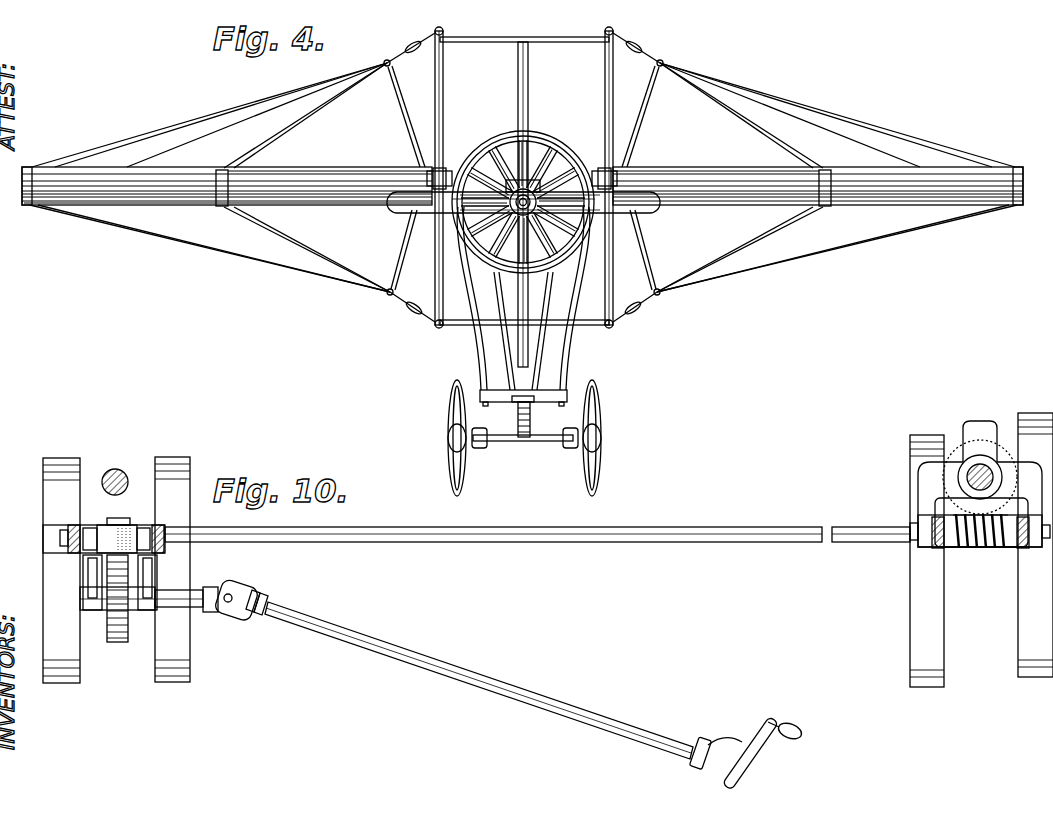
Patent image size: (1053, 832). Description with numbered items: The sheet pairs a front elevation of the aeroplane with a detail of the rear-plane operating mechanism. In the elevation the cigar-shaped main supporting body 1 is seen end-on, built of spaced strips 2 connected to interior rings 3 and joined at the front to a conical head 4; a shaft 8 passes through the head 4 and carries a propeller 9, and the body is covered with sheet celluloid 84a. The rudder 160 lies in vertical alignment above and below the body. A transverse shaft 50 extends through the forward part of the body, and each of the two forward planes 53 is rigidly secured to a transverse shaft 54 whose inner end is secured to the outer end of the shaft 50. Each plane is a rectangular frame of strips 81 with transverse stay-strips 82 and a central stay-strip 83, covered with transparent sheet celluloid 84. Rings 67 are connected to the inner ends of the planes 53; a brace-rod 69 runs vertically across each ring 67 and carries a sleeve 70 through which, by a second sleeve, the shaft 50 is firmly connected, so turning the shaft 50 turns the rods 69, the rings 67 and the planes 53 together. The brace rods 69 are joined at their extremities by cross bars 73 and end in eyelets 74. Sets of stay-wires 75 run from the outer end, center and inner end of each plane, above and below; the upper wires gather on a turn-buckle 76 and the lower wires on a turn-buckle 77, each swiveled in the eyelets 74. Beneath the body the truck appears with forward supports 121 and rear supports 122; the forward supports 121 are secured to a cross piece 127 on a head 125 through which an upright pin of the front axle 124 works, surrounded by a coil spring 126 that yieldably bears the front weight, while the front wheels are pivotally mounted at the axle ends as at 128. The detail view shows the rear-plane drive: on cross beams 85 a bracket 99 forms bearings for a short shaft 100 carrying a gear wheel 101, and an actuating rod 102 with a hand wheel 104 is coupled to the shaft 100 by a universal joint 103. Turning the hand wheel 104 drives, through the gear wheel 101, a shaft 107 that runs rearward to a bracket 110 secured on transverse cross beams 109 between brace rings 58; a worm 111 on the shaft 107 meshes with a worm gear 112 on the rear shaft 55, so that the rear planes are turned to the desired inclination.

In FIG. 4, the main supporting body 1 is at (500, 128).
In FIG. 4, the strips 2 is at (486, 152).
In FIG. 4, the rings 3 is at (530, 133).
In FIG. 4, the conical head 4 is at (508, 218).
In FIG. 4, the shaft 8 is at (548, 150).
In FIG. 4, the propeller 9 is at (650, 212).
In FIG. 10, the shaft 50 is at (118, 470).
In FIG. 4, the forward planes 53 is at (522, 163).
In FIG. 4, the transverse shaft 54 is at (130, 195).
In FIG. 10, the shaft 55 is at (968, 477).
In FIG. 10, the brace rings 58 is at (912, 443).
In FIG. 4, the rings 67 is at (428, 95).
In FIG. 4, the brace-rod 69 is at (444, 80).
In FIG. 4, the sleeve 70 is at (436, 168).
In FIG. 4, the cross bars 73 is at (497, 37).
In FIG. 4, the eyelets 74 is at (448, 22).
In FIG. 4, the stay-wires 75 is at (220, 112).
In FIG. 4, the turn-buckle 76 is at (410, 44).
In FIG. 4, the turn-buckle 77 is at (410, 318).
In FIG. 4, the strips 81 is at (27, 205).
In FIG. 4, the transverse stay-strips 82 is at (187, 196).
In FIG. 4, the central stay-strip 83 is at (222, 206).
In FIG. 4, the sheet celluloid 84 is at (330, 169).
In FIG. 4, the sheet celluloid 84a is at (508, 178).
In FIG. 10, the cross beams 85 is at (75, 525).
In FIG. 10, the bracket 99 is at (150, 570).
In FIG. 10, the shaft 100 is at (178, 607).
In FIG. 10, the gear wheel 101 is at (118, 643).
In FIG. 10, the actuating rod 102 is at (448, 668).
In FIG. 10, the universal joint 103 is at (240, 596).
In FIG. 10, the hand wheel 104 is at (762, 754).
In FIG. 10, the shaft 107 is at (512, 542).
In FIG. 10, the transverse cross beams 109 is at (938, 552).
In FIG. 10, the bracket 110 is at (932, 495).
In FIG. 10, the worm 111 is at (980, 550).
In FIG. 10, the worm gear 112 is at (1000, 442).
In FIG. 4, the forward supports 121 is at (480, 362).
In FIG. 4, the rear supports 122 is at (500, 312).
In FIG. 4, the front axle 124 is at (548, 442).
In FIG. 4, the head 125 is at (533, 400).
In FIG. 4, the coil spring 126 is at (518, 416).
In FIG. 4, the cross piece 127 is at (495, 395).
In FIG. 4, the pivotal wheel mounting 128 is at (480, 448).
In FIG. 4, the rudder 160 is at (530, 60).